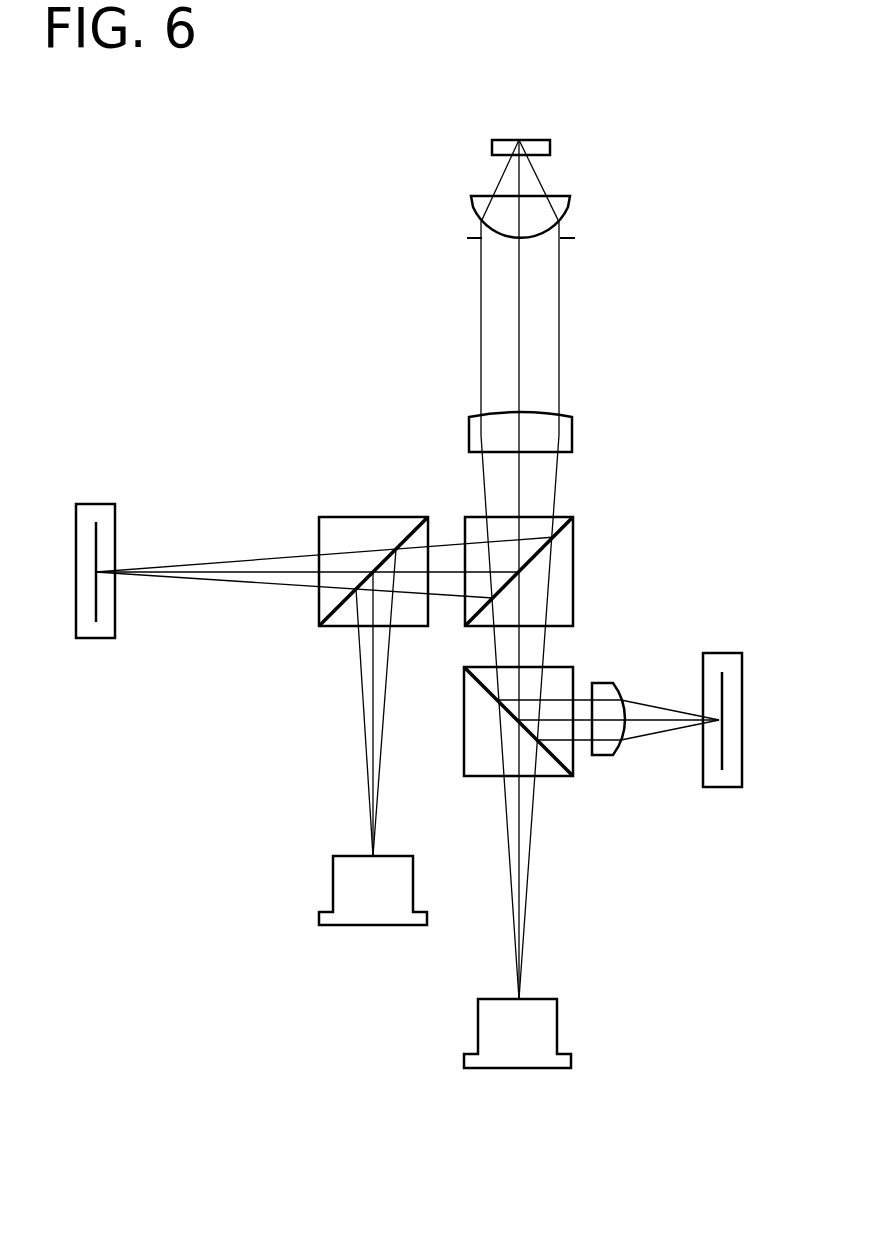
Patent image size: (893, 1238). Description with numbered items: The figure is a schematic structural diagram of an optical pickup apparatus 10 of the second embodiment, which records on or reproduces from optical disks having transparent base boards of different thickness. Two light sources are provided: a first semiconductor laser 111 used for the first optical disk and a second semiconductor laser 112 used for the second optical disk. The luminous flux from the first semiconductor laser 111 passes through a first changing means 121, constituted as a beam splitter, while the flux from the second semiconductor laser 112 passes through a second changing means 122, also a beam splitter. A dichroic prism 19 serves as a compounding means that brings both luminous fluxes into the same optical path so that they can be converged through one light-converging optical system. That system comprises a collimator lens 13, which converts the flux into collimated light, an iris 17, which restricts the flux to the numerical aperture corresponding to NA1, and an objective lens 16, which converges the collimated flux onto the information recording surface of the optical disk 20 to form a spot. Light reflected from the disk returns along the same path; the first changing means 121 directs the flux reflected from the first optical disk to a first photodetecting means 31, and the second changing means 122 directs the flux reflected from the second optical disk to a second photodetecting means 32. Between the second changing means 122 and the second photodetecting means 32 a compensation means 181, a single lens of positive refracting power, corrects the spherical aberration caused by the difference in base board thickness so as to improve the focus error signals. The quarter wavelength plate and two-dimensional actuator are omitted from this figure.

The optical pickup apparatus 10 is at (641, 908).
The collimator lens 13 is at (573, 437).
The objective lens 16 is at (571, 200).
The iris 17 is at (575, 238).
The dichroic prism 19 is at (575, 550).
The optical disk 20 is at (551, 148).
The first photodetecting means 31 is at (97, 503).
The second photodetecting means 32 is at (722, 652).
The first semiconductor laser 111 is at (373, 926).
The second semiconductor laser 112 is at (558, 1028).
The first changing means 121 is at (337, 516).
The second changing means 122 is at (565, 667).
The compensation means 181 is at (600, 756).